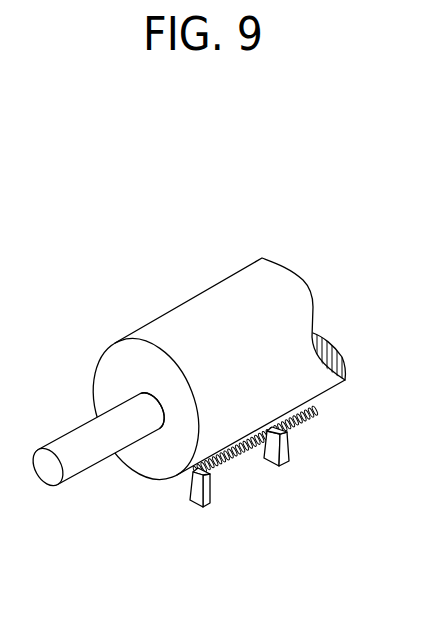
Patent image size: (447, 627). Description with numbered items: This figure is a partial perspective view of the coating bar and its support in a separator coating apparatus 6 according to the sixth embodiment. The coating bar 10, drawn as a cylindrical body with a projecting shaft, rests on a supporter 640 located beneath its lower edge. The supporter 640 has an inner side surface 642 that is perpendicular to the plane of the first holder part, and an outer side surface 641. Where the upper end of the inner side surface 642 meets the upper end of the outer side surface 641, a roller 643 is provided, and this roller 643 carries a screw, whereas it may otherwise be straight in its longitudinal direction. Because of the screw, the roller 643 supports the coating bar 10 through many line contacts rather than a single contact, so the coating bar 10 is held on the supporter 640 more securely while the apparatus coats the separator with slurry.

The separator coating apparatus 6 is at (201, 222).
The coating bar 10 is at (281, 245).
The supporter 640 is at (306, 450).
The outer side surface 641 is at (212, 505).
The inner side surface 642 is at (190, 490).
The roller 643 is at (247, 457).